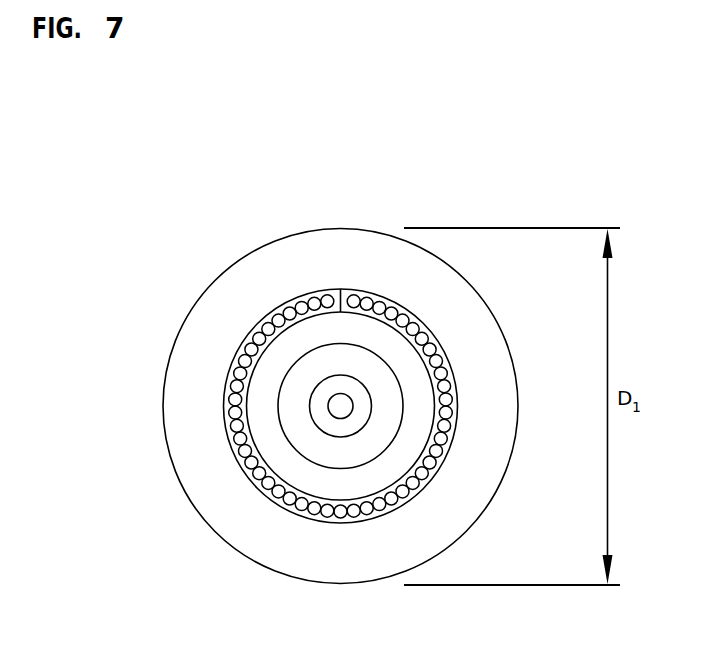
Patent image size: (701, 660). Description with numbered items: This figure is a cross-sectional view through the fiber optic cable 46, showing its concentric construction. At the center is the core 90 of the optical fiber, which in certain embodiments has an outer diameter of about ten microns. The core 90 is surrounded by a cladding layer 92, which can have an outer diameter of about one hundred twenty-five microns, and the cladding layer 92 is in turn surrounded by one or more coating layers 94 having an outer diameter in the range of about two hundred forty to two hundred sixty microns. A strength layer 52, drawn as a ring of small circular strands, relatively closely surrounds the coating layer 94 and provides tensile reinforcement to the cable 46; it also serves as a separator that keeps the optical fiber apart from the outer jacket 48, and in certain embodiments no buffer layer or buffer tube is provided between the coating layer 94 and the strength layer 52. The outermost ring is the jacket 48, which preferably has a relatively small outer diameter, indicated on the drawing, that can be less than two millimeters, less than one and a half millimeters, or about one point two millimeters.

The fiber optic cable 46 is at (152, 301).
The jacket 48 is at (267, 243).
The strength layer 52 is at (390, 302).
The core 90 is at (328, 405).
The cladding layer 92 is at (310, 419).
The coating layer 94 is at (320, 467).